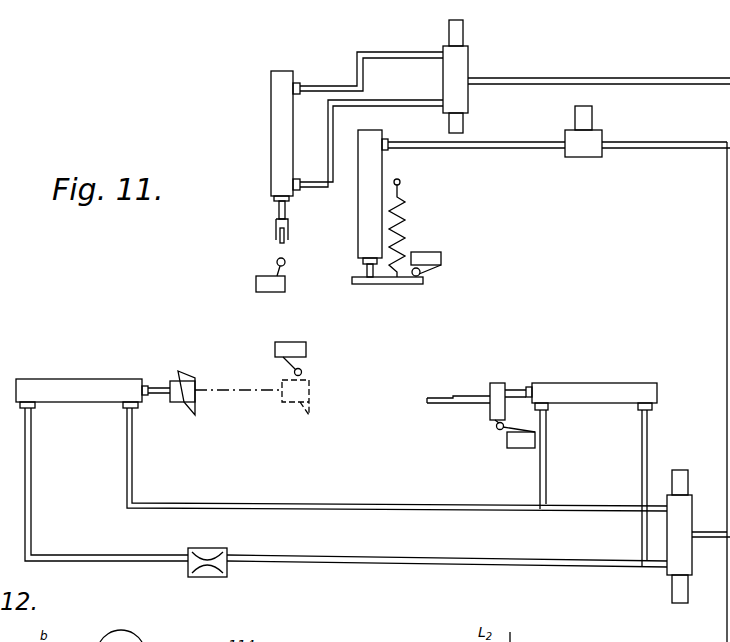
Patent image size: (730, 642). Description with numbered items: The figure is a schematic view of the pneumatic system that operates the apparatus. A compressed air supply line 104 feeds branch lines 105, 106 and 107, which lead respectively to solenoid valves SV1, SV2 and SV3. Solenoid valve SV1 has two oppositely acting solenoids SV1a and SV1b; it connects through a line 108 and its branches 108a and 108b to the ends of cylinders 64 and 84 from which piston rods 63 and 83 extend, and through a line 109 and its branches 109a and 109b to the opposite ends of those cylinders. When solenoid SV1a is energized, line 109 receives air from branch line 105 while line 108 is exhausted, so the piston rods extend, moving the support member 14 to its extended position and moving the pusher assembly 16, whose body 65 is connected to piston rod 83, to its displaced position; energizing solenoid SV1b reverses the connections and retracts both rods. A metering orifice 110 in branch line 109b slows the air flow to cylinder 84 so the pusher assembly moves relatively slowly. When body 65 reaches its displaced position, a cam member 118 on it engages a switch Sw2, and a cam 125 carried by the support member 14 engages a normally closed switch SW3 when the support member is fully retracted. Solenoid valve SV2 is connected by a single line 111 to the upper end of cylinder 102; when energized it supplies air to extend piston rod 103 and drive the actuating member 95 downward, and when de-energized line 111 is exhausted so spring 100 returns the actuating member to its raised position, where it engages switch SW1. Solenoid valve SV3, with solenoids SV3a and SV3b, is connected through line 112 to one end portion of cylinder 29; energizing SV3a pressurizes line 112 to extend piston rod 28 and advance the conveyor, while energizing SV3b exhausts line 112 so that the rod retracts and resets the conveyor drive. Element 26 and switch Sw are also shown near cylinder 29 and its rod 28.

The cylinder 29 is at (271, 150).
The piston rod 28 is at (279, 222).
The clamp member 26 is at (280, 244).
The switch Sw is at (285, 292).
The line 112 is at (418, 53).
The solenoid valve SV3 is at (458, 66).
The solenoid SV3a is at (463, 122).
The solenoid SV3b is at (463, 33).
The branch line 107 is at (694, 78).
The branch line 106 is at (694, 142).
The line 111 is at (527, 152).
The solenoid valve SV2 is at (591, 147).
The cylinder 102 is at (358, 220).
The spring 100 is at (403, 226).
The piston rod 103 is at (366, 282).
The actuating member 95 is at (405, 284).
The switch SW1 is at (441, 255).
The cylinder 84 is at (112, 379).
The piston rod 83 is at (156, 388).
The cam member 118 is at (186, 372).
The pusher assembly 16 is at (204, 377).
The body 65 is at (181, 396).
The switch Sw2 is at (306, 349).
The cylinder 64 is at (620, 383).
The piston rod 63 is at (518, 390).
The cam 125 is at (492, 412).
The support member 14 is at (452, 404).
The switch SW3 is at (525, 448).
The branch line 108a is at (546, 478).
The branch line 108b is at (242, 504).
The line 108 is at (576, 512).
The branch line 109a is at (648, 443).
The branch line 109b is at (316, 556).
The line 109 is at (648, 568).
The metering orifice 110 is at (215, 545).
The solenoid valve SV1 is at (685, 566).
The solenoid SV1a is at (684, 482).
The solenoid SV1b is at (680, 596).
The branch line 105 is at (706, 532).
The compressed air supply line 104 is at (727, 608).